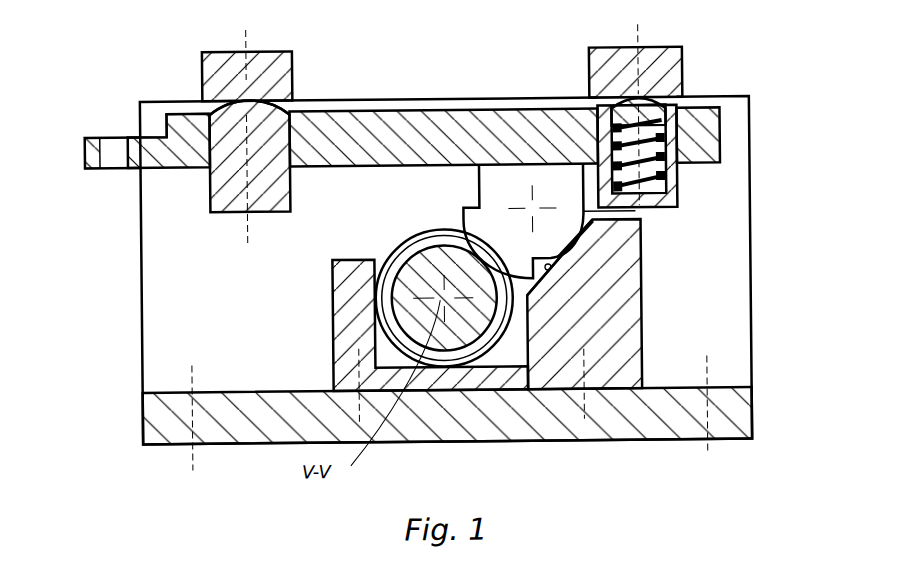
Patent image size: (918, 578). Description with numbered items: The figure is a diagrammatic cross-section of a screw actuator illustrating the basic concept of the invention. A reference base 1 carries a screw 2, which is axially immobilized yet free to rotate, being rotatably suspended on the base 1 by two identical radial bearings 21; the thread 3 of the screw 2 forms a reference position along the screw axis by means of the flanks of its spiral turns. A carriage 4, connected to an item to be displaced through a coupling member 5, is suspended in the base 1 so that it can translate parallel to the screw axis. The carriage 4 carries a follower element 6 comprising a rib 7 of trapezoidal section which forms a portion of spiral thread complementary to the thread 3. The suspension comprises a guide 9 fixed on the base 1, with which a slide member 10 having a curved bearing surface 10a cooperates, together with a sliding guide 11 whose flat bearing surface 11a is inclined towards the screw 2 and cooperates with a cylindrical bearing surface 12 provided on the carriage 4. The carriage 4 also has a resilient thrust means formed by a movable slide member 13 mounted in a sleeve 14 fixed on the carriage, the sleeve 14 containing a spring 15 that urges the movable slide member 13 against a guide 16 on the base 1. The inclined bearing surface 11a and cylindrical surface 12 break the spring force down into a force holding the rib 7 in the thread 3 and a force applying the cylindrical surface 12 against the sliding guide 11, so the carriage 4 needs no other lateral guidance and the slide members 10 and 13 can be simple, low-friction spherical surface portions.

The reference base 1 is at (742, 416).
The screw 2 is at (418, 312).
The thread 3 is at (394, 262).
The carriage 4 is at (382, 100).
The coupling member 5 is at (137, 165).
The follower element 6 is at (496, 193).
The rib 7 is at (471, 223).
The guide 9 is at (222, 58).
The slide member 10 is at (223, 198).
The curved bearing surface 10a is at (299, 100).
The sliding guide 11 is at (609, 355).
The flat bearing surface 11a is at (550, 276).
The cylindrical bearing surface 12 is at (636, 212).
The movable slide member 13 is at (652, 106).
The sleeve 14 is at (676, 175).
The spring 15 is at (667, 196).
The guide 16 is at (662, 55).
The radial bearing 21 is at (340, 291).